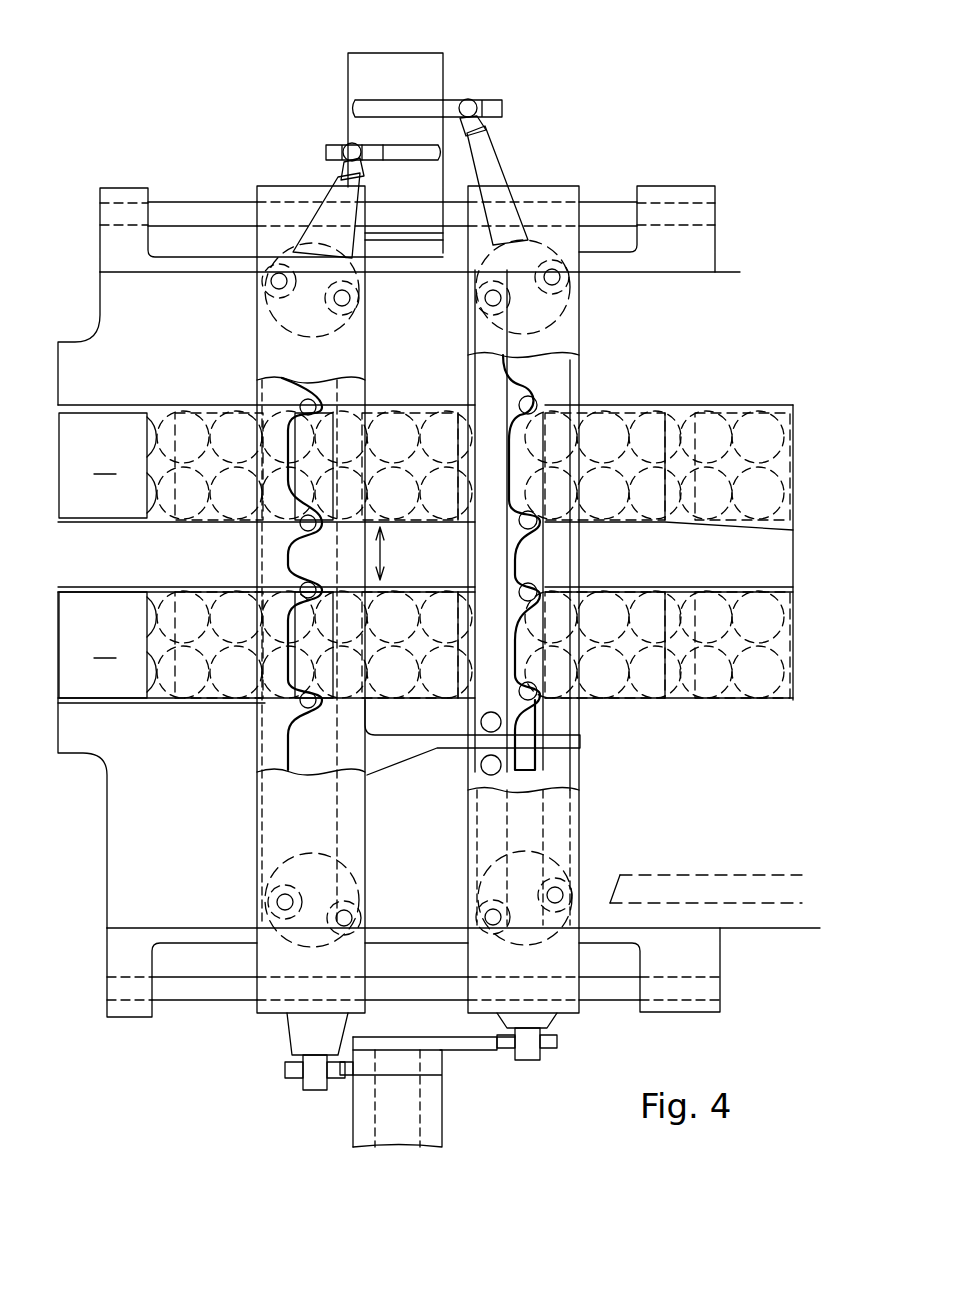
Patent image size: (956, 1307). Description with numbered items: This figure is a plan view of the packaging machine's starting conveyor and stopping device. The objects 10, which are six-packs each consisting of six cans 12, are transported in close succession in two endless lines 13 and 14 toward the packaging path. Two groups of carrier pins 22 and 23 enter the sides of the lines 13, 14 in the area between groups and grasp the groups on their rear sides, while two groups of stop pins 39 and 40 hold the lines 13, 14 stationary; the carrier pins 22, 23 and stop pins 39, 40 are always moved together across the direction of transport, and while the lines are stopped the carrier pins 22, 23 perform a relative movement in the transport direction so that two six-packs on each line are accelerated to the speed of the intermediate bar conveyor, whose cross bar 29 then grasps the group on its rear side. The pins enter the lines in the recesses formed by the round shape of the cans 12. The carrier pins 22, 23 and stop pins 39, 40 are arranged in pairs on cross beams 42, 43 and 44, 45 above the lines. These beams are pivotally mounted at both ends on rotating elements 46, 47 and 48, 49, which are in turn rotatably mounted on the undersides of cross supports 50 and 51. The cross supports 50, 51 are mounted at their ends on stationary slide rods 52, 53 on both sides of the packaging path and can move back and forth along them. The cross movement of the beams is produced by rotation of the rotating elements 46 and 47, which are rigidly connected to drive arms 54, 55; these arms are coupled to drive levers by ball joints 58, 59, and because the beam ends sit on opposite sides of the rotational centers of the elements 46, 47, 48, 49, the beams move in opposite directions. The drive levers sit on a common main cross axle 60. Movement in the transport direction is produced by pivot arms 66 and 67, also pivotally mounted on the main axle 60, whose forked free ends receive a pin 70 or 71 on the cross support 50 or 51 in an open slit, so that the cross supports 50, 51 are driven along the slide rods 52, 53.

The object 10 is at (752, 440).
The can 12 is at (188, 430).
The line 13 is at (118, 398).
The line 14 is at (137, 708).
The carrier pin 22 is at (537, 405).
The carrier pin 23 is at (534, 514).
The cross bar 29 is at (525, 765).
The stop pin 39 is at (300, 405).
The stop pin 40 is at (300, 525).
The cross beam 42 is at (478, 392).
The cross beam 43 is at (560, 382).
The cross beam 44 is at (262, 392).
The cross beam 45 is at (352, 400).
The rotating element 46 is at (298, 238).
The rotating element 47 is at (533, 250).
The rotating element 48 is at (305, 950).
The rotating element 49 is at (540, 950).
The cross support 50 is at (258, 327).
The cross support 51 is at (612, 878).
The slide rod 52 is at (172, 212).
The slide rod 53 is at (186, 998).
The drive arm 54 is at (322, 180).
The drive arm 55 is at (490, 160).
The ball joint 58 is at (348, 143).
The ball joint 59 is at (476, 100).
The main cross axle 60 is at (395, 1120).
The pivot arm 66 is at (480, 1044).
The pivot arm 67 is at (353, 1080).
The pin 70 is at (313, 1082).
The pin 71 is at (533, 1058).